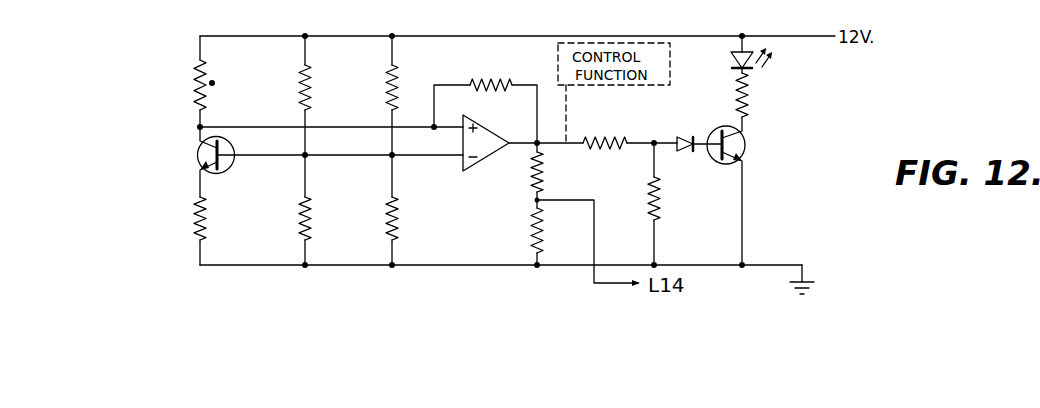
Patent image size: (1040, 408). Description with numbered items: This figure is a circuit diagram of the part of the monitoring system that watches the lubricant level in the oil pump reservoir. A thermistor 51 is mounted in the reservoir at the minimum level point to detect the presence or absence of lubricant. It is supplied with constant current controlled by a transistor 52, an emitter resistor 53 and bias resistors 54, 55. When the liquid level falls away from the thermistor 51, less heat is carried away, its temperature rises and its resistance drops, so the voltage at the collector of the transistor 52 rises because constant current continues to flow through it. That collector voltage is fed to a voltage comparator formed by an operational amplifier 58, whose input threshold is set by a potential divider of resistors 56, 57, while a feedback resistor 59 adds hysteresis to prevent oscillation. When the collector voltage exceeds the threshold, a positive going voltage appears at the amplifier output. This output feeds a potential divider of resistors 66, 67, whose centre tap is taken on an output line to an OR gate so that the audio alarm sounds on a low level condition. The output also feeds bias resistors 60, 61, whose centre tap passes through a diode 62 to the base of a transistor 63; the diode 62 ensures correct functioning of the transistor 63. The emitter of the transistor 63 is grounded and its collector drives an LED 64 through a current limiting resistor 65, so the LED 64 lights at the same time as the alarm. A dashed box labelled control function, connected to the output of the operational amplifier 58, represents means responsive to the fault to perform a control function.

The thermistor 51 is at (199, 63).
The transistor 52 is at (198, 158).
The emitter resistor 53 is at (195, 221).
The bias resistor 54 is at (303, 84).
The bias resistor 55 is at (300, 222).
The resistor 56 is at (388, 84).
The resistor 57 is at (387, 222).
The operational amplifier 58 is at (478, 125).
The feedback resistor 59 is at (489, 84).
The bias resistor 60 is at (609, 140).
The bias resistor 61 is at (660, 196).
The diode 62 is at (689, 136).
The transistor 63 is at (746, 152).
The LED 64 is at (731, 59).
The current limiting resistor 65 is at (749, 101).
The resistor 66 is at (543, 186).
The resistor 67 is at (543, 244).